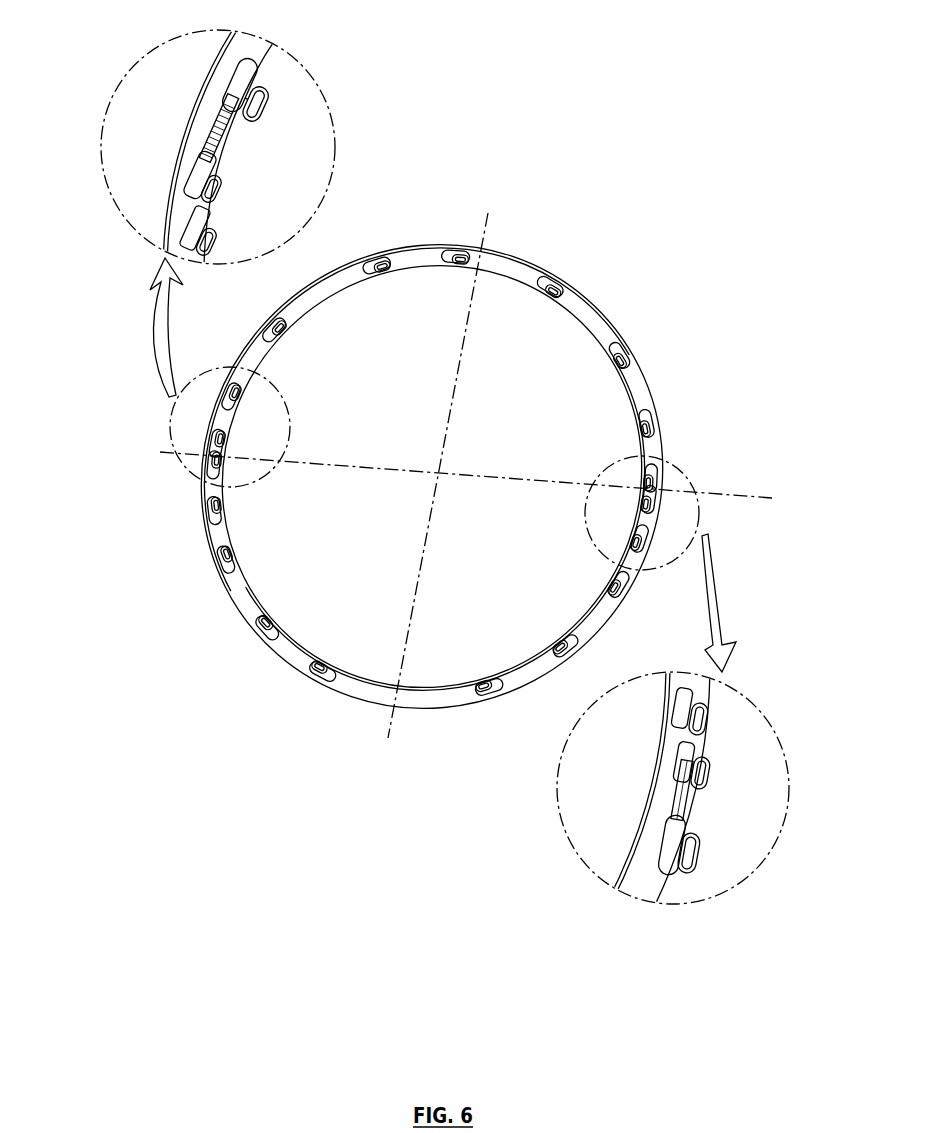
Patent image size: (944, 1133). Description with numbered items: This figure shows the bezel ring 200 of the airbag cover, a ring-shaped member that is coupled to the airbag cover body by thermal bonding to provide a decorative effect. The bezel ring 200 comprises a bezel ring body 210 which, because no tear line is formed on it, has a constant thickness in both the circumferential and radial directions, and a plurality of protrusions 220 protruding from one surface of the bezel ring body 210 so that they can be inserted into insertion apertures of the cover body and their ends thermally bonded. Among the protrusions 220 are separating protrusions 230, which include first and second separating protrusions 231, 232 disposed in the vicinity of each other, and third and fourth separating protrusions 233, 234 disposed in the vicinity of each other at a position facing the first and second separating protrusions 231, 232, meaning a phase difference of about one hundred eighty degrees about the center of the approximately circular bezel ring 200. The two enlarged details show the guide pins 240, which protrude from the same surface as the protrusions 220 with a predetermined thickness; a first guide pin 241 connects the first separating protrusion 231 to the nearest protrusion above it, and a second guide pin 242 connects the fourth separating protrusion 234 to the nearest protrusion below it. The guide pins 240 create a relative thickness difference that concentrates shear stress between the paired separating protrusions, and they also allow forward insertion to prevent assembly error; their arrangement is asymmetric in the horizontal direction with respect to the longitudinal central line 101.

The bezel ring 200 is at (693, 109).
The longitudinal central line 101 is at (466, 463).
The bezel ring body 210 is at (590, 320).
The protrusions 220 is at (382, 268).
The separating protrusions 230 is at (89, 423).
The first separating protrusion 231 is at (215, 445).
The second separating protrusion 232 is at (212, 468).
The third separating protrusion 233 is at (660, 476).
The fourth separating protrusion 234 is at (662, 494).
The guide pin 240 is at (449, 461).
The first guide pin 241 is at (215, 128).
The second guide pin 242 is at (690, 800).